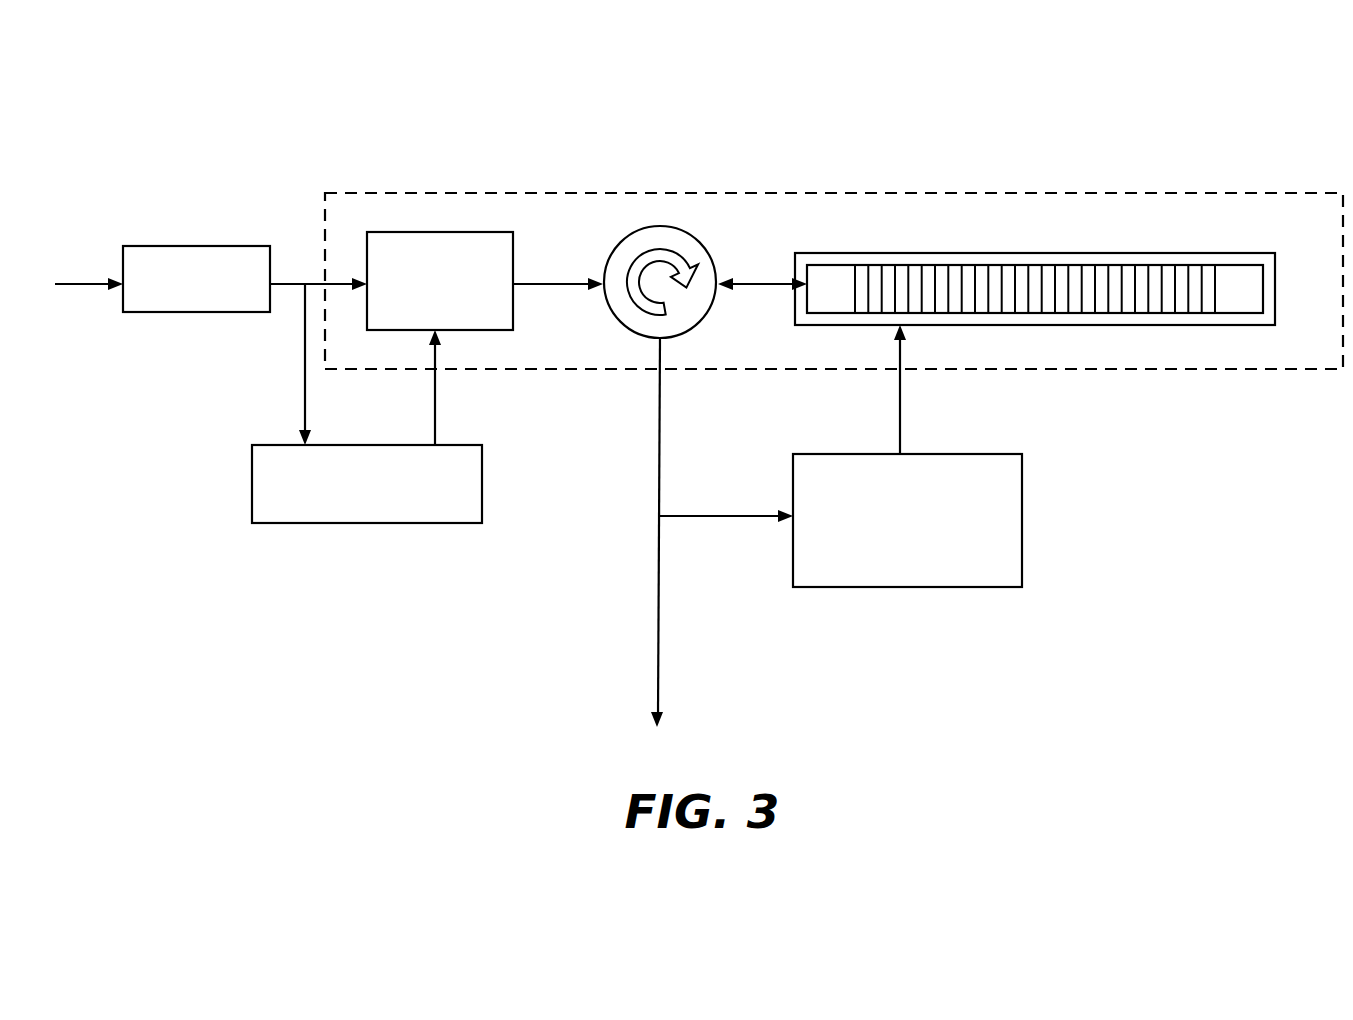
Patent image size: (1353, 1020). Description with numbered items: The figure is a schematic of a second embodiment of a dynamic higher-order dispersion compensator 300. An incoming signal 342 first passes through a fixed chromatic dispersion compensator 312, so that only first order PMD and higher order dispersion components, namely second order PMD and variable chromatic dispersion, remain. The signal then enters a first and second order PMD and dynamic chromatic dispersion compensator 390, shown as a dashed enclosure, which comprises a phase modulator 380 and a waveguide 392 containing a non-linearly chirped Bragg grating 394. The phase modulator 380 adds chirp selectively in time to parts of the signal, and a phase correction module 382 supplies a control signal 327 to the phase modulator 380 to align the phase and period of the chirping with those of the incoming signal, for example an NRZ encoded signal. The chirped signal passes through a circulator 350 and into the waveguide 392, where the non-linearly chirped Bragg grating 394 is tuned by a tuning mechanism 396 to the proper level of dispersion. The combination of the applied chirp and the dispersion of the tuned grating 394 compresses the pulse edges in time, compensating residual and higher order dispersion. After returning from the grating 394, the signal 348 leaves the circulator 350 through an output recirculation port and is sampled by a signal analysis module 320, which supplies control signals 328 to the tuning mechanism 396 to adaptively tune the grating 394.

The compensator 300 is at (332, 112).
The signal 342 is at (77, 283).
The fixed chromatic dispersion compensator 312 is at (196, 279).
The phase modulator 380 is at (440, 281).
The circulator 350 is at (661, 226).
The first and second order PMD and dynamic chromatic dispersion compensator 390 is at (997, 193).
The non-linearly chirped Bragg grating 394 is at (1008, 275).
The tuning mechanism 396 is at (1139, 253).
The waveguide 392 is at (1232, 276).
The control signal 327 is at (436, 400).
The phase correction module 382 is at (367, 484).
The control signals 328 is at (900, 398).
The signal analysis module 320 is at (907, 520).
The signal 348 is at (657, 604).